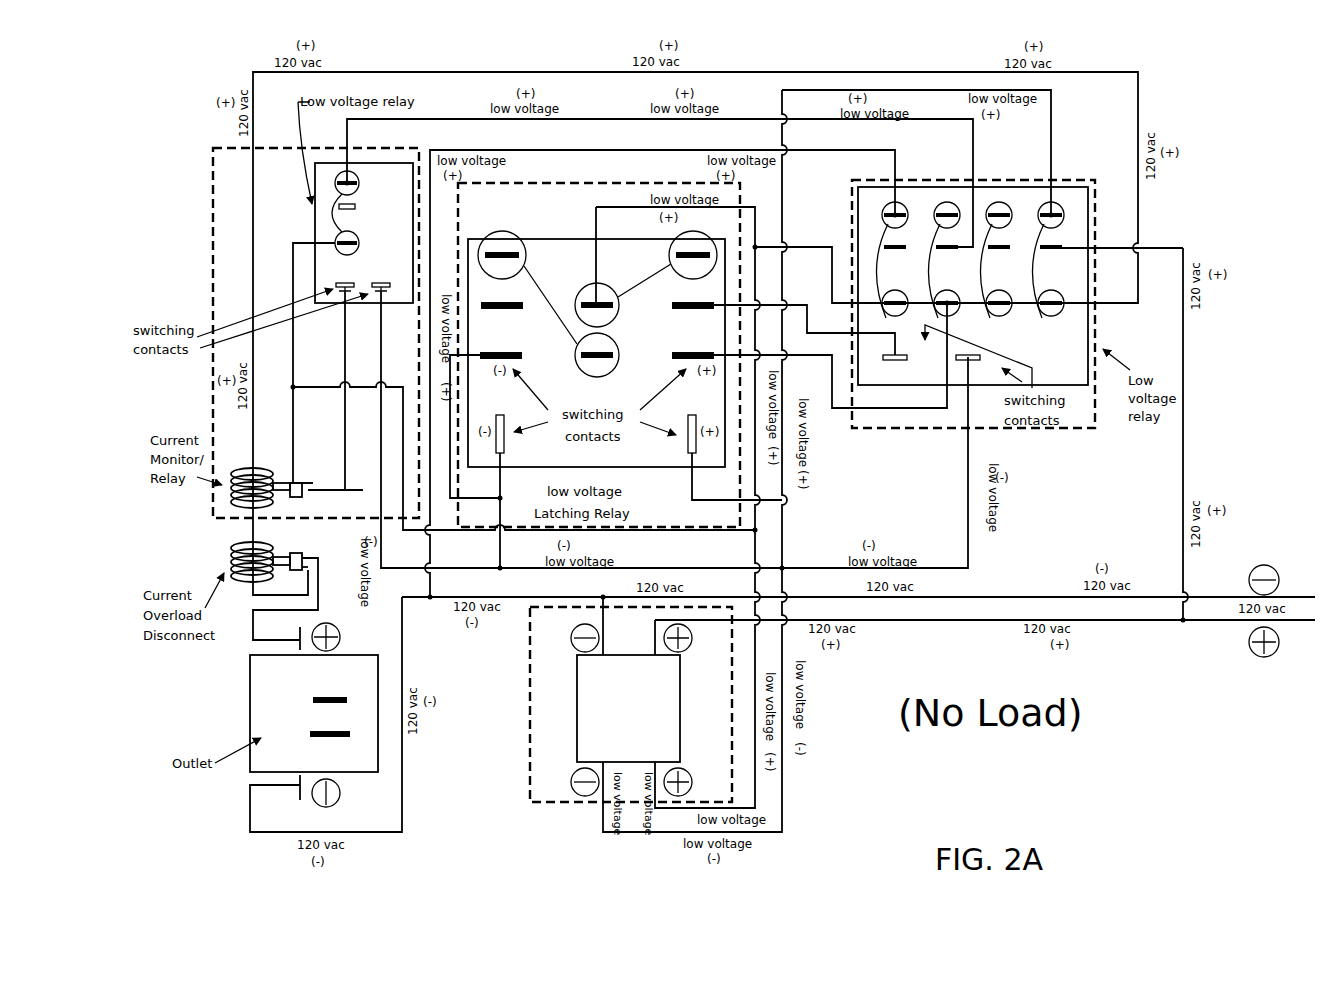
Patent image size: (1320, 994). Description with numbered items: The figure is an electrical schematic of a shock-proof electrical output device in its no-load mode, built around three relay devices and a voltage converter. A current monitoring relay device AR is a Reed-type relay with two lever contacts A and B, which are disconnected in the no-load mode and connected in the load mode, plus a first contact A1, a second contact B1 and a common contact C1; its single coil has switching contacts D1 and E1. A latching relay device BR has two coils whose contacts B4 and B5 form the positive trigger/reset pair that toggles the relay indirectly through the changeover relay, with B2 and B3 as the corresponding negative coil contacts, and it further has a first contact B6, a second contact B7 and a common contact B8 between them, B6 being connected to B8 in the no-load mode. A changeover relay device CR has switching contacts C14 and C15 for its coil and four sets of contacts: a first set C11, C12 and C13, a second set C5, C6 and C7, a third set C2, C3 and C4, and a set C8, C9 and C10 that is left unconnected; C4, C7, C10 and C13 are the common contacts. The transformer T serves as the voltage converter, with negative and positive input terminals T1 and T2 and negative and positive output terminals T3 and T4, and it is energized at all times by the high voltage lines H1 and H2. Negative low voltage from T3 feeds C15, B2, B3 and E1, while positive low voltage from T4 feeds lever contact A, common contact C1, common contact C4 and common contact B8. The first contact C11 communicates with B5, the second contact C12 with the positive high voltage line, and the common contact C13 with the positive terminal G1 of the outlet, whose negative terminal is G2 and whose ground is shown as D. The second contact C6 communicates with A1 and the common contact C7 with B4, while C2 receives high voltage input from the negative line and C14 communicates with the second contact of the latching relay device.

The current monitoring relay device AR is at (206, 178).
The latching relay device BR is at (614, 180).
The changeover relay device CR is at (1102, 231).
The transformer T is at (526, 762).
The first contact A1 is at (358, 183).
The second contact B1 is at (360, 208).
The common contact C1 is at (358, 243).
The switching contact D1 is at (335, 279).
The switching contact E1 is at (385, 279).
The lever contact A is at (301, 473).
The lever contact B is at (335, 503).
The outlet D is at (314, 713).
The positive terminal G1 is at (339, 637).
The negative terminal G2 is at (339, 793).
The negative contact B2 is at (512, 356).
The negative contact B3 is at (513, 438).
The positive contact B4 is at (678, 356).
The positive contact B5 is at (672, 438).
The first contact B6 is at (673, 255).
The second contact B7 is at (678, 306).
The common contact B8 is at (584, 305).
The first contact C2 is at (904, 212).
The second contact C3 is at (894, 258).
The common contact C4 is at (901, 295).
The first contact C5 is at (956, 212).
The second contact C6 is at (946, 258).
The common contact C7 is at (952, 295).
The first contact C8 is at (1007, 212).
The second contact C9 is at (998, 258).
The common contact C10 is at (1006, 295).
The first contact C11 is at (1063, 212).
The second contact C12 is at (1051, 258).
The common contact C13 is at (1058, 295).
The switching contact C14 is at (901, 368).
The switching contact C15 is at (970, 368).
The negative input terminal T1 is at (571, 638).
The positive input terminal T2 is at (690, 638).
The negative output terminal T3 is at (570, 782).
The positive output terminal T4 is at (690, 782).
The high voltage H1 is at (1278, 642).
The high voltage H2 is at (1278, 580).